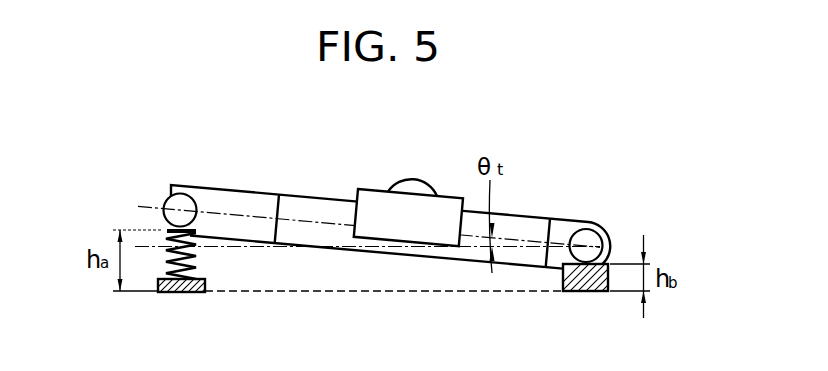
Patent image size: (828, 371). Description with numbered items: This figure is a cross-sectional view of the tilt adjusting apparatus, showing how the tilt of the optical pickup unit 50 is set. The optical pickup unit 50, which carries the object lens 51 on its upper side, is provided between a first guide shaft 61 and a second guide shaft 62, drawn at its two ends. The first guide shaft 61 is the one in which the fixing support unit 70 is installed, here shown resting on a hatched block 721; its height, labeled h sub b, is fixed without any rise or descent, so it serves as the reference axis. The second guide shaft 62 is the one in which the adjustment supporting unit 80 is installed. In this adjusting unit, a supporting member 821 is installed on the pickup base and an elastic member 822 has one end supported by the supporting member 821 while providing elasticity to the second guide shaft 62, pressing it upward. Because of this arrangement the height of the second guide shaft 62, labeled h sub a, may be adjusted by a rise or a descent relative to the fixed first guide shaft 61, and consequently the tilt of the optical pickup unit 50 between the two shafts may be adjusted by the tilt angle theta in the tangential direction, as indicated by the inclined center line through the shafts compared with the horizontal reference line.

The optical pickup unit 50 is at (367, 189).
The object lens 51 is at (410, 187).
The first guide shaft 61 is at (587, 240).
The second guide shaft 62 is at (168, 198).
The fixing support unit 70 is at (587, 305).
The support base 721 is at (583, 292).
The adjustment supporting unit 80 is at (206, 289).
The supporting member 821 is at (180, 293).
The elastic member 822 is at (196, 258).